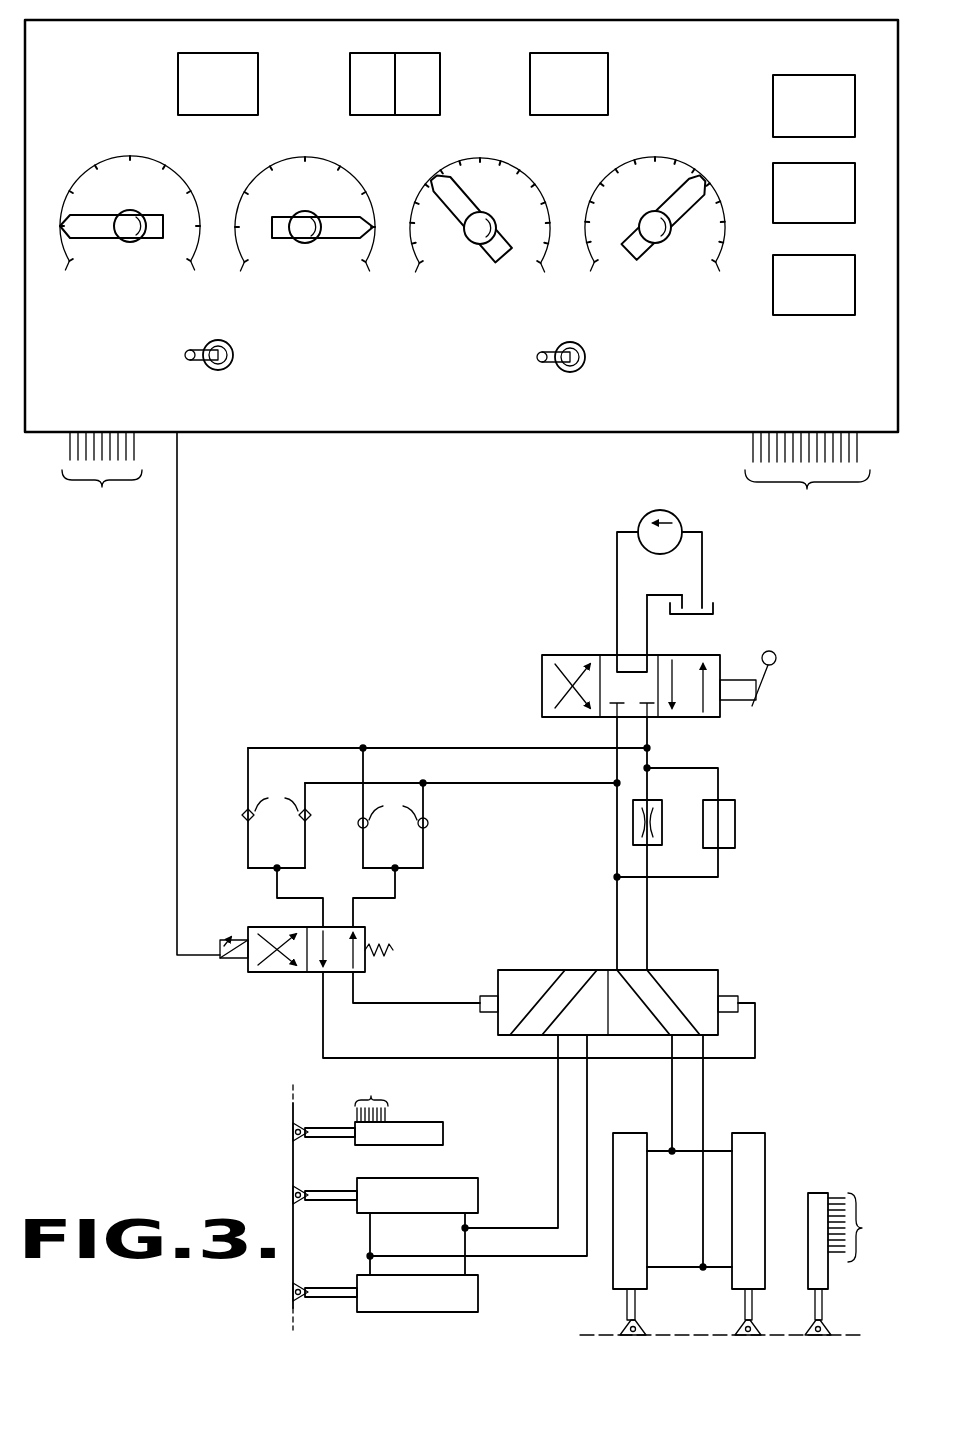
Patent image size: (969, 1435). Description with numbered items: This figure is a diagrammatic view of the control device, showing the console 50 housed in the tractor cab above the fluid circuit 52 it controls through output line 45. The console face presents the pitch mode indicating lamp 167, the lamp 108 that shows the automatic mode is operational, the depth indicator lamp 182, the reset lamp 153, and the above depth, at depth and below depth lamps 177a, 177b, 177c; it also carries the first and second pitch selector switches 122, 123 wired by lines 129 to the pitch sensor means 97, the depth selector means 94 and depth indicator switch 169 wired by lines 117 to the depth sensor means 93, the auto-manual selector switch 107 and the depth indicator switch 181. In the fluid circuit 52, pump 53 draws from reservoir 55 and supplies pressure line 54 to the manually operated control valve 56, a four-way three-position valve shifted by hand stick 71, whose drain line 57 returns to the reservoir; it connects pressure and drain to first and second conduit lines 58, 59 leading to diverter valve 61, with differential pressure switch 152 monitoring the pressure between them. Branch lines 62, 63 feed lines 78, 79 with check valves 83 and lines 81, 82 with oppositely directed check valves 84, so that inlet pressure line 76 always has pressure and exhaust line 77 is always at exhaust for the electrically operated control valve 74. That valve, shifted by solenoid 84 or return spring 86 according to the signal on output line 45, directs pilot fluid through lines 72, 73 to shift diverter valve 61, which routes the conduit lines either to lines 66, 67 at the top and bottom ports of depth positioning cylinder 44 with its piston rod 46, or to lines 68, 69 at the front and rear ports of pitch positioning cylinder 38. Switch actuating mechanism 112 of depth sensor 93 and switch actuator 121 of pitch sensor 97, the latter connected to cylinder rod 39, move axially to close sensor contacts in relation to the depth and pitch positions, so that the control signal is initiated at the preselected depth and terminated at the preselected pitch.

The console 50 is at (392, 436).
The pitch mode indicating lamp 167 is at (178, 60).
The lamp 108 is at (352, 53).
The depth indicator lamp 182 is at (438, 54).
The reset lamp 153 is at (608, 58).
The above depth lamp 177a is at (833, 75).
The at depth lamp 177b is at (845, 163).
The below depth lamp 177c is at (845, 315).
The first pitch selector switch 122 is at (118, 240).
The second pitch selector switch 123 is at (292, 240).
The depth selector means 94 is at (466, 236).
The depth indicator switch 169 is at (652, 222).
The auto-manual selector switch 107 is at (214, 366).
The depth indicator switch 181 is at (572, 348).
The lines 129 is at (229, 777).
The lines 117 is at (826, 847).
The output line 45 is at (179, 602).
The pump 53 is at (656, 512).
The pressure line 54 is at (615, 561).
The drain line 57 is at (648, 600).
The reservoir 55 is at (715, 611).
The fluid circuit 52 is at (540, 625).
The manually operated control valve 56 is at (542, 662).
The hand stick 71 is at (764, 682).
The first conduit line 58 is at (615, 731).
The second conduit line 59 is at (649, 729).
The branch line 63 is at (465, 747).
The branch line 62 is at (485, 785).
The differential pressure switch 152 is at (737, 821).
The check valves 83 is at (276, 803).
The check valves / solenoid 84 is at (218, 982).
The line 78 is at (248, 852).
The line 79 is at (306, 852).
The line 81 is at (364, 852).
The line 82 is at (424, 853).
The inlet pressure line 76 is at (277, 898).
The exhaust line 77 is at (396, 898).
The electrically operated control valve 74 is at (281, 972).
The return spring 86 is at (392, 946).
The line 73 is at (395, 1003).
The line 72 is at (323, 1058).
The diverter valve 61 is at (700, 971).
The line 69 is at (558, 1105).
The line 68 is at (587, 1100).
The line 66 is at (672, 1100).
The line 67 is at (704, 1097).
The depth positioning cylinder 44 is at (765, 1135).
The piston rod 46 is at (745, 1304).
The depth sensor means 93 is at (830, 1283).
The switch actuating mechanism 112 is at (825, 1311).
The switch actuator 121 is at (323, 1128).
The pitch sensor means 97 is at (422, 1125).
The cylinder rod 39 is at (335, 1201).
The pitch positioning cylinder 38 is at (470, 1178).